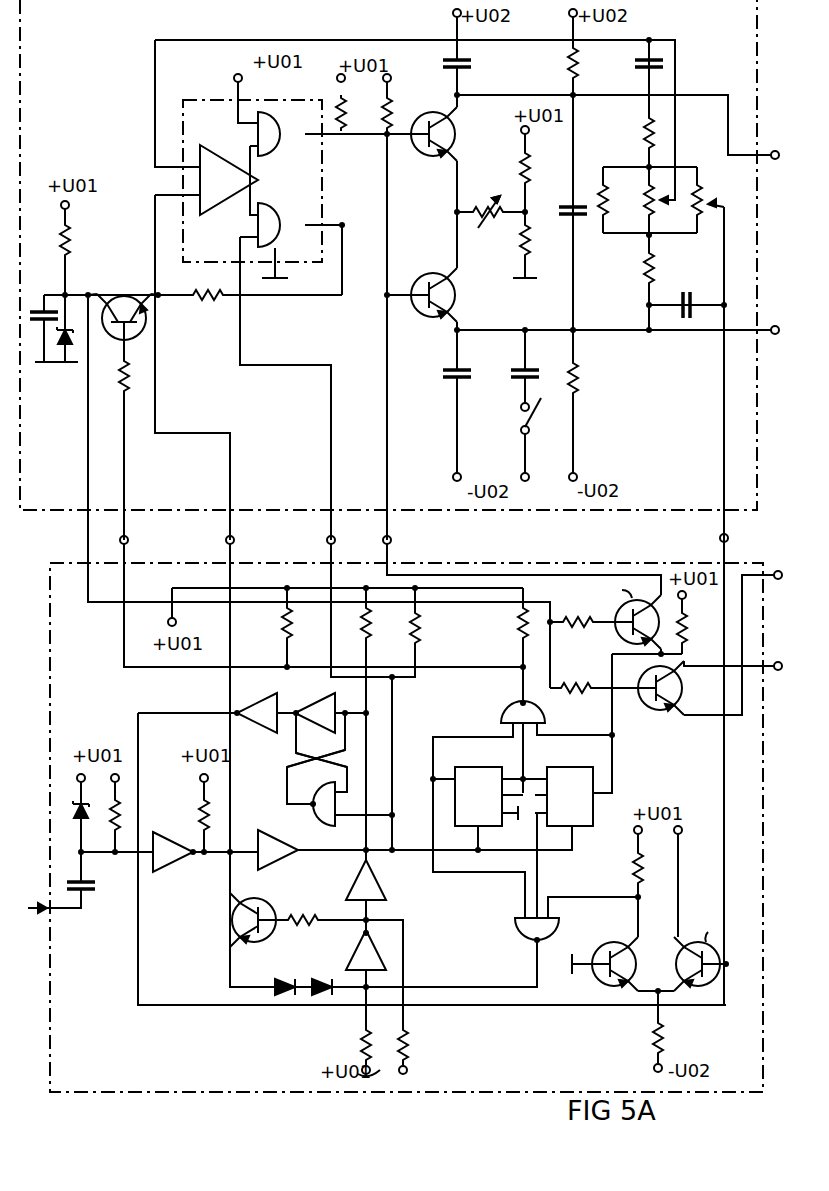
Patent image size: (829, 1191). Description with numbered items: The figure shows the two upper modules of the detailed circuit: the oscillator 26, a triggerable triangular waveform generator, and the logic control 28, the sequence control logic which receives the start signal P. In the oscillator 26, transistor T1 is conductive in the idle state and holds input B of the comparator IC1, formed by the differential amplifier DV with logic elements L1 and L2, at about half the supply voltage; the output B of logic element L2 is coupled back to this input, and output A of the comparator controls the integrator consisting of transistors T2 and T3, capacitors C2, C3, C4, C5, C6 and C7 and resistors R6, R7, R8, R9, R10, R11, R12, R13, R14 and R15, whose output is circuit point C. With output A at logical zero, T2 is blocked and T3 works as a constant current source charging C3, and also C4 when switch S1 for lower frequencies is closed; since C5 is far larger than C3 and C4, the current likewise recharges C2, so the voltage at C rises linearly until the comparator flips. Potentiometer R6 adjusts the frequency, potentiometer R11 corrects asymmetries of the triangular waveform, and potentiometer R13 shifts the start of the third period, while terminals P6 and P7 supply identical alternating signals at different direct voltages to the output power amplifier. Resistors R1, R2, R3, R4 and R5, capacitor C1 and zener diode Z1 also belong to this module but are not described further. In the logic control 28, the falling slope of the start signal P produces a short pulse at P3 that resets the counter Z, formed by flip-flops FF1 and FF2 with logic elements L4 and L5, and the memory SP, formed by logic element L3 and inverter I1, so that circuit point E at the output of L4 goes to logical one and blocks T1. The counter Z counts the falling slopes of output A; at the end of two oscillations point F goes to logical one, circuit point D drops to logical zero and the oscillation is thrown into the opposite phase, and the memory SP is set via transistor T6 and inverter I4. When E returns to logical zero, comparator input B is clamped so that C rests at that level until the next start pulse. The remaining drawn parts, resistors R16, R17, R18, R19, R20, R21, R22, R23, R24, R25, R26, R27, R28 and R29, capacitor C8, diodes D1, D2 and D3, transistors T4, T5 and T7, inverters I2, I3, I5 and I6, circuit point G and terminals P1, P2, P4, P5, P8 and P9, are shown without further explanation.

The oscillator 26 is at (80, 76).
The logic control 28 is at (107, 1065).
The comparator IC1 is at (224, 100).
The differential amplifier DV is at (229, 192).
The resistor R1 is at (82, 240).
The resistor R2 is at (129, 380).
The resistor R3 is at (195, 300).
The resistor R4 is at (346, 110).
The resistor R5 is at (392, 106).
The potentiometer R6 is at (494, 224).
The integrator resistor R7 is at (536, 162).
The integrator resistor R8 is at (522, 256).
The integrator resistor R9 is at (567, 64).
The integrator resistor R10 is at (646, 132).
The potentiometer R11 is at (644, 204).
The integrator resistor R12 is at (598, 190).
The potentiometer R13 is at (694, 230).
The integrator resistor R14 is at (644, 284).
The integrator resistor R15 is at (579, 386).
The resistor R16 is at (112, 838).
The resistor R17 is at (200, 810).
The resistor R18 is at (282, 628).
The resistor R19 is at (384, 630).
The resistor R20 is at (420, 636).
The resistor R21 is at (518, 618).
The resistor R22 is at (298, 920).
The resistor R23 is at (408, 1040).
The resistor R24 is at (362, 1042).
The resistor R25 is at (577, 609).
The resistor R26 is at (564, 694).
The resistor R27 is at (686, 629).
The resistor R28 is at (636, 870).
The resistor R29 is at (663, 1030).
The capacitor C1 is at (36, 305).
The integrator capacitor C2 is at (470, 70).
The integrator capacitor C3 is at (450, 380).
The integrator capacitor C4 is at (518, 366).
The integrator capacitor C5 is at (564, 200).
The integrator capacitor C6 is at (638, 64).
The integrator capacitor C7 is at (682, 304).
The capacitor C8 is at (92, 888).
The integrator output C is at (724, 190).
The transistor T1 is at (120, 300).
The transistor T2 is at (432, 158).
The transistor T3 is at (430, 271).
The transistor T4 is at (610, 940).
The transistor T5 is at (665, 784).
The transistor T6 is at (230, 926).
The transistor T7 is at (646, 708).
The zener diode Z1 is at (68, 349).
The diode D1 is at (74, 812).
The diode D2 is at (280, 980).
The diode D3 is at (320, 980).
The switch S1 is at (541, 416).
The inverter I1 is at (319, 700).
The inverter I2 is at (264, 698).
The inverter I3 is at (158, 870).
The inverter I4 is at (268, 830).
The inverter I5 is at (358, 878).
The inverter I6 is at (359, 948).
The logic element L1 is at (279, 142).
The logic element L2 is at (284, 240).
The logic element L3 is at (320, 824).
The logic element L4 is at (510, 709).
The logic element L5 is at (515, 934).
The flip-flop FF1 is at (478, 796).
The flip-flop FF2 is at (570, 796).
The terminal P1 is at (138, 541).
The terminal P2 is at (244, 541).
The circuit point P3 is at (344, 541).
The terminal P4 is at (402, 541).
The terminal P5 is at (737, 540).
The terminal P6 is at (776, 317).
The terminal P7 is at (776, 144).
The terminal P8 is at (778, 565).
The terminal P9 is at (778, 655).
The start signal P is at (39, 924).
The comparator output A is at (296, 134).
The comparator input B is at (298, 214).
The circuit point E is at (522, 666).
The counter Z is at (555, 764).
The circuit point D is at (372, 986).
The circuit point F is at (556, 897).
The signal node G is at (296, 716).
The memory SP is at (286, 757).